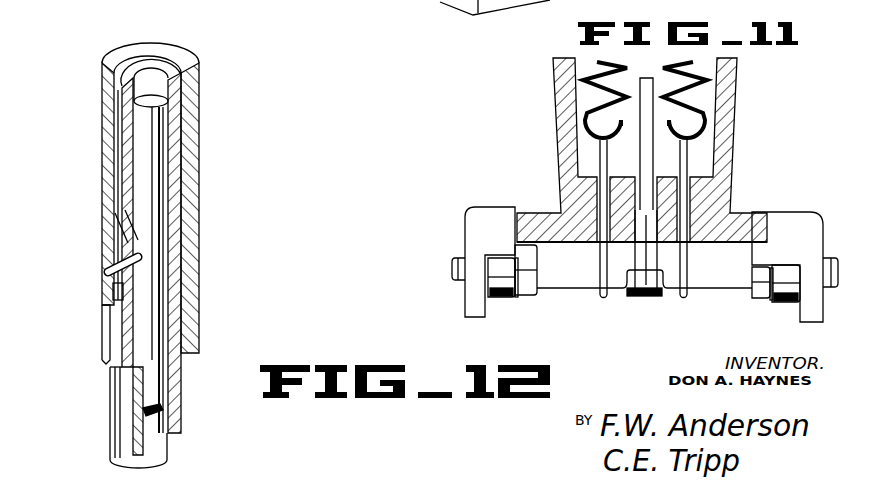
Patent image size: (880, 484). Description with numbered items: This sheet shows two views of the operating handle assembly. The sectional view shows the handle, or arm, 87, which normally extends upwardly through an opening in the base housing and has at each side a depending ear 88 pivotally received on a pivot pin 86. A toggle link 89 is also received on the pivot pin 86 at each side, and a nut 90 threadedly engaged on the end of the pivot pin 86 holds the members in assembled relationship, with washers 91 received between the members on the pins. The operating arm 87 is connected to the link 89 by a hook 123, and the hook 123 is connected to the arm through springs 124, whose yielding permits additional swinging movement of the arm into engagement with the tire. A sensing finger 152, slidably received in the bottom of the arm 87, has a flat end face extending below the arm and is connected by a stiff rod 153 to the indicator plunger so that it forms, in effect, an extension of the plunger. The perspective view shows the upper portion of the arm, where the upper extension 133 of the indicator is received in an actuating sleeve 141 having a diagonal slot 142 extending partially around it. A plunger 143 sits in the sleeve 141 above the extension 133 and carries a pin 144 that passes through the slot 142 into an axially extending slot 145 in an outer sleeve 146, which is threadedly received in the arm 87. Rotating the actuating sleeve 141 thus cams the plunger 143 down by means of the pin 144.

In FIG. 11, the pivot pin 86 is at (450, 273).
In FIG. 11, the handle 87 is at (733, 158).
In FIG. 11, the depending ear 88 is at (467, 303).
In FIG. 11, the toggle link 89 is at (497, 297).
In FIG. 11, the nut 90 is at (525, 297).
In FIG. 11, the washer 91 is at (515, 263).
In FIG. 11, the hook 123 is at (683, 300).
In FIG. 11, the spring 124 is at (583, 88).
In FIG. 11, the sensing finger 152 is at (647, 259).
In FIG. 11, the stiff rod 153 is at (641, 78).
In FIG. 12, the upper extension 133 is at (168, 452).
In FIG. 12, the actuating sleeve 141 is at (182, 197).
In FIG. 12, the diagonal slot 142 is at (123, 245).
In FIG. 12, the plunger 143 is at (158, 155).
In FIG. 12, the pin 144 is at (117, 263).
In FIG. 12, the axially extending slot 145 is at (113, 292).
In FIG. 12, the outer sleeve 146 is at (103, 318).